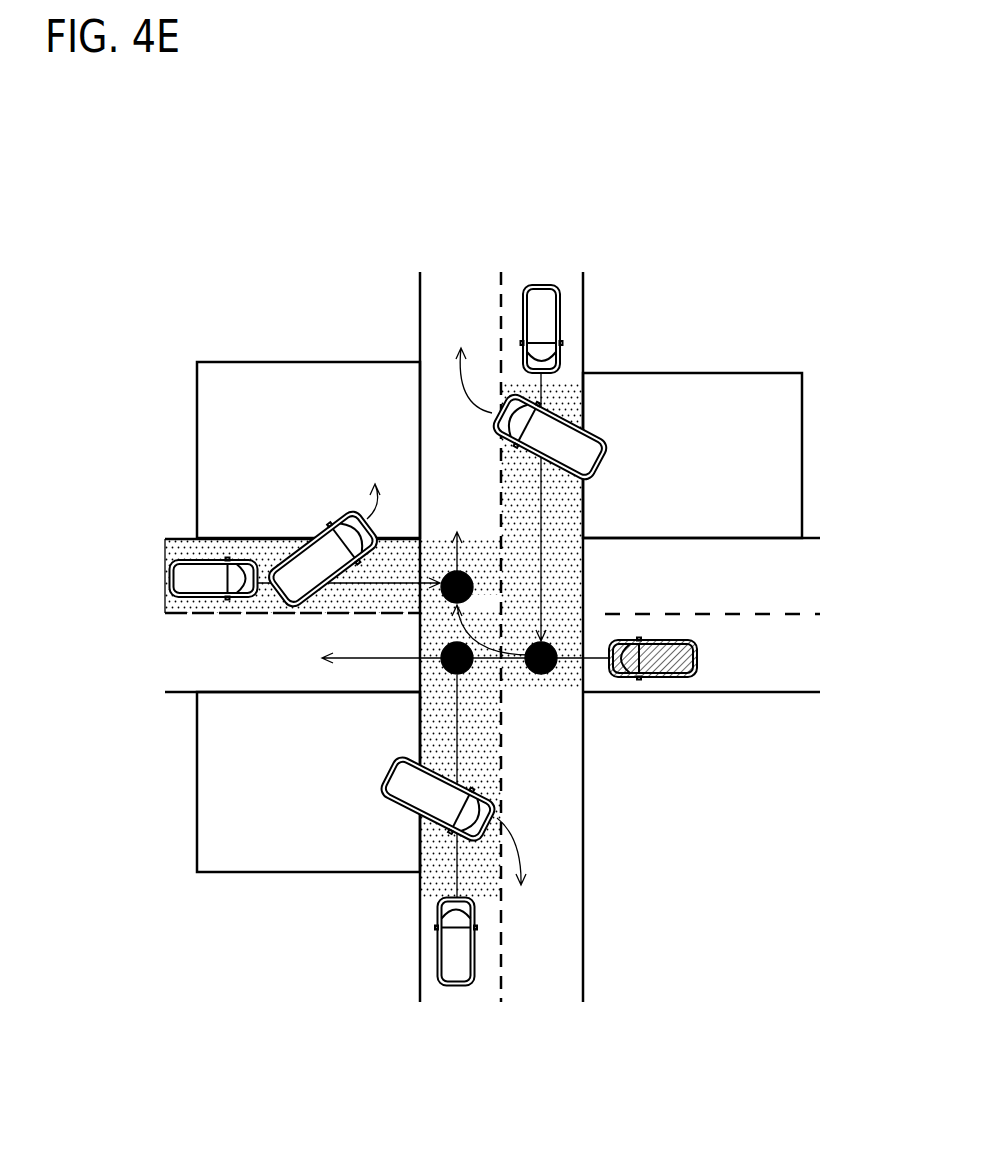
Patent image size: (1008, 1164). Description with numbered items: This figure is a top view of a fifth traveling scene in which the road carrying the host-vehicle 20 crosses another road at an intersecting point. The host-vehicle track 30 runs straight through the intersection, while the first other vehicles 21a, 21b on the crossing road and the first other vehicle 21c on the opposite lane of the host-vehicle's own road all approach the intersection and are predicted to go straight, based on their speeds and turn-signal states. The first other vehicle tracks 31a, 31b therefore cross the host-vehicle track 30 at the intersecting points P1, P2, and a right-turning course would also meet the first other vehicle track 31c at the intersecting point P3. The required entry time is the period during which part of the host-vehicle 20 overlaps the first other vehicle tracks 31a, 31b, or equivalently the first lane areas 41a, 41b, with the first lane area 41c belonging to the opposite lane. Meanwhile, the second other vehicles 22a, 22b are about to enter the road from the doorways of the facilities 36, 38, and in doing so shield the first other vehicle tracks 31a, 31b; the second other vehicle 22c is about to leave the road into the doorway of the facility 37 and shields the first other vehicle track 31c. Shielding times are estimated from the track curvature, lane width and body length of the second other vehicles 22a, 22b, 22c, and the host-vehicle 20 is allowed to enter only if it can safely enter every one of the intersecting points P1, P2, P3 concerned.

The host-vehicle 20 is at (680, 677).
The first other vehicle 21a is at (557, 306).
The first other vehicle 21b is at (475, 943).
The first other vehicle 21c is at (178, 572).
The second other vehicle 22a is at (563, 413).
The second other vehicle 22b is at (413, 822).
The second other vehicle 22c is at (290, 550).
The host-vehicle track 30 is at (593, 660).
The first other vehicle track 31a is at (542, 587).
The first other vehicle track 31b is at (457, 764).
The first other vehicle track 31c is at (377, 583).
The facility 36 is at (802, 412).
The facility 37 is at (218, 362).
The facility 38 is at (258, 873).
The first lane area 41a is at (562, 513).
The first lane area 41b is at (428, 723).
The first lane area 41c is at (407, 538).
The intersecting point P1 is at (548, 672).
The intersecting point P2 is at (460, 673).
The intersecting point P3 is at (452, 573).